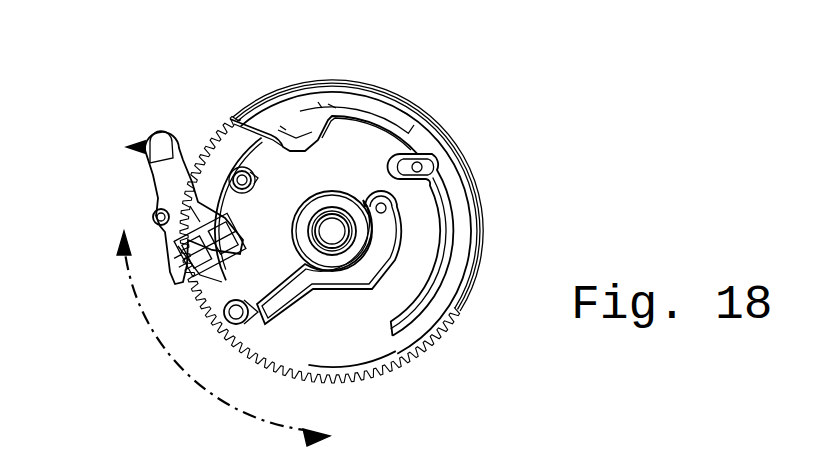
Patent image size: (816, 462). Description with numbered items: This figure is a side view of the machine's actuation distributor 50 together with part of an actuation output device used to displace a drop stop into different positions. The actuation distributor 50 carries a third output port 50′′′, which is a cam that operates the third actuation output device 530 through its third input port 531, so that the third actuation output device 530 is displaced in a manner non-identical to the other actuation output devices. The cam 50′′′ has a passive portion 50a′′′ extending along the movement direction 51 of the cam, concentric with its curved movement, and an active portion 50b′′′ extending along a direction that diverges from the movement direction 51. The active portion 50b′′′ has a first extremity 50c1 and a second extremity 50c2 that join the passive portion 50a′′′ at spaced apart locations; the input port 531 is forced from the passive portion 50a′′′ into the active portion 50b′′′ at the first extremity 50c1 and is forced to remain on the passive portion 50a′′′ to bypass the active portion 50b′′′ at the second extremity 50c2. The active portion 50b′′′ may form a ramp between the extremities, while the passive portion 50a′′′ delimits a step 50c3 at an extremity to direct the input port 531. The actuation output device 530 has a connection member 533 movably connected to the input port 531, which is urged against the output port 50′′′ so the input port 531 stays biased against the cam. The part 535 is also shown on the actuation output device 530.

The actuation distributor 50 is at (425, 350).
The passive portion 50a′′′ is at (247, 323).
The active portion 50b′′′ is at (313, 130).
The first extremity 50c1 is at (331, 101).
The second extremity 50c2 is at (283, 124).
The step 50c3 is at (320, 103).
The third output port 50′′′ is at (405, 113).
The movement direction 51 is at (139, 305).
The third actuation output device 530 is at (128, 116).
The third input port 531 is at (238, 308).
The connection member 533 is at (168, 186).
The lever tip 535 is at (128, 147).